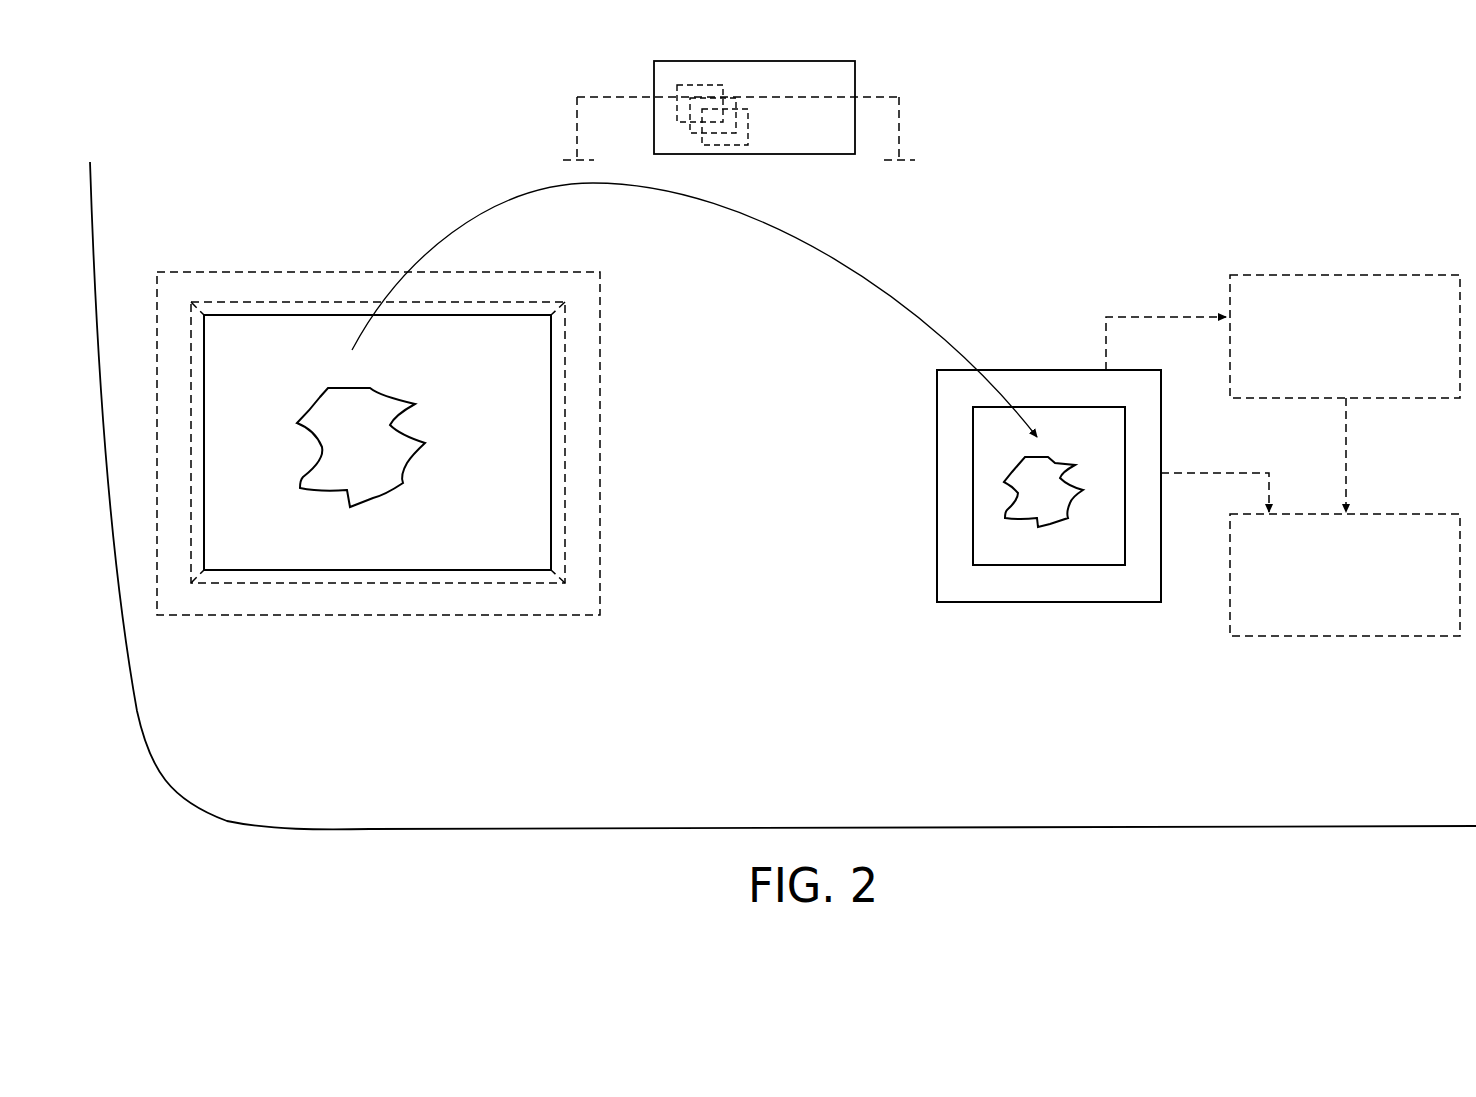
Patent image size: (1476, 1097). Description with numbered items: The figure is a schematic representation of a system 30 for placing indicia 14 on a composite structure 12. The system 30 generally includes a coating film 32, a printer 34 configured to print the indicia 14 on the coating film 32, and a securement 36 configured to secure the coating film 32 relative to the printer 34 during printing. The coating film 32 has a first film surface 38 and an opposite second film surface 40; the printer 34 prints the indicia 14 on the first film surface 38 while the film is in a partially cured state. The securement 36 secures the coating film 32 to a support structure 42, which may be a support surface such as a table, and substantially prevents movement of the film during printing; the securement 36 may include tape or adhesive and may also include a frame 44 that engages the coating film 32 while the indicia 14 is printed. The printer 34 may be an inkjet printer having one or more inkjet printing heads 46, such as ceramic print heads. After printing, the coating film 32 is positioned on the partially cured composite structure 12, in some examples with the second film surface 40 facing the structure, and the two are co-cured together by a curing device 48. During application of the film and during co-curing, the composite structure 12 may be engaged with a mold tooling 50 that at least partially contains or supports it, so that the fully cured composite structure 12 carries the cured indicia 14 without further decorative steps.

The composite structure 12 is at (1085, 577).
The indicia 14 is at (373, 472).
The system for placing indicia on composite structures 30 is at (1358, 106).
The coating film 32 is at (235, 572).
The printer 34 is at (771, 83).
The securement 36 is at (378, 500).
The first film surface 38 is at (273, 538).
The second film surface 40 is at (367, 535).
The support structure 42 is at (872, 97).
The frame 44 is at (495, 575).
The inkjet printing heads 46 is at (702, 145).
The curing device 48 is at (1352, 640).
The mold tooling 50 is at (1358, 268).